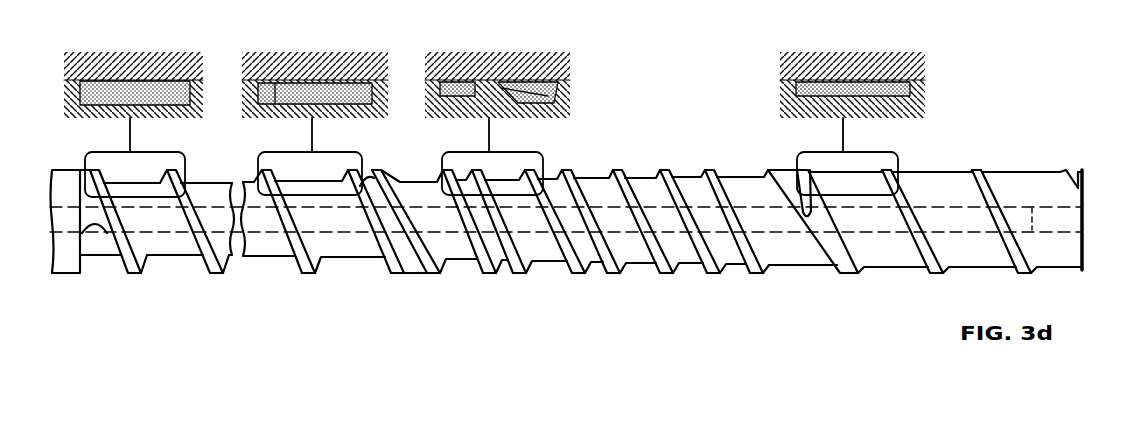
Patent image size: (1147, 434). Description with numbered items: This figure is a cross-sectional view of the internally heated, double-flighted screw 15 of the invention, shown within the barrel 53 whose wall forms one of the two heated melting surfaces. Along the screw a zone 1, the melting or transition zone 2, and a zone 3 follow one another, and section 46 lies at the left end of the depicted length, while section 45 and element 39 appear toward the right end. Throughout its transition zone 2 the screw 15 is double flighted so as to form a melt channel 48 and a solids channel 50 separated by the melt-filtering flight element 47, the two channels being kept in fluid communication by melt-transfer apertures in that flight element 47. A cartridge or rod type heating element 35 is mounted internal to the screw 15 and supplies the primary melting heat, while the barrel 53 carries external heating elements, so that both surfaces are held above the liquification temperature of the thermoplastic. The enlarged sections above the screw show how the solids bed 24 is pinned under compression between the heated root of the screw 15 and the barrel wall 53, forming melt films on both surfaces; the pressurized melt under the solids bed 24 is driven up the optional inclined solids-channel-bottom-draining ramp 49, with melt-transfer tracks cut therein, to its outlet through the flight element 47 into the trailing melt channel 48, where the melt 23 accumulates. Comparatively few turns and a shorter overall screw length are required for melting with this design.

The screw 15 is at (988, 258).
The screw shank 46 is at (60, 180).
The solids bed 24 is at (148, 95).
The melt 23 is at (262, 93).
The barrel 53 is at (92, 63).
The melt-filtering flight element 47 is at (486, 85).
The solids-channel-bottom-draining ramp 49 is at (520, 88).
The electrical resistance heating element 35 is at (172, 225).
The melt channel 48 is at (505, 263).
The solids channel 50 is at (553, 245).
The flight 39 is at (620, 172).
The screw tip end 45 is at (1066, 223).
The feed section 1 is at (118, 300).
The melting or transition zone 2 is at (360, 298).
The metering section 3 is at (905, 292).